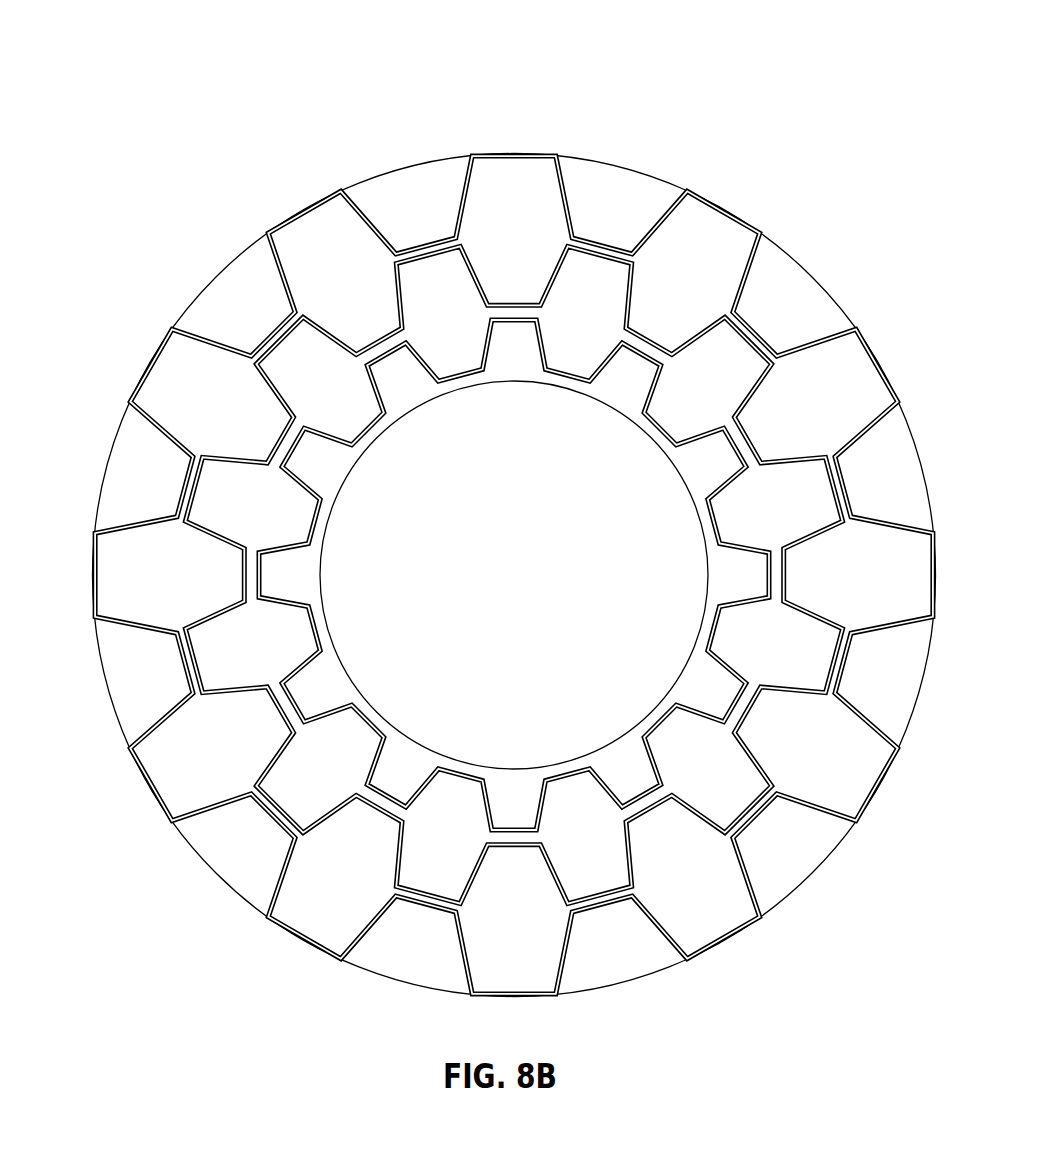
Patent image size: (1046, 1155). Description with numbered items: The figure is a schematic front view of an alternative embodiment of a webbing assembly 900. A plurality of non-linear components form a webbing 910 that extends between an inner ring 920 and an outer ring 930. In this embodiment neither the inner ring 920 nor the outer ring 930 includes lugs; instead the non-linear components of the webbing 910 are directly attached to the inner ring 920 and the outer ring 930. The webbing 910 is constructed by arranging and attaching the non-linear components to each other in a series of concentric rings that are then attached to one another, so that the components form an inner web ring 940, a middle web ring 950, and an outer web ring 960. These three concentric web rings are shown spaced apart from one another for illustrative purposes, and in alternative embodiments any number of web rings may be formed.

The webbing assembly 900 is at (499, 504).
The webbing 910 is at (514, 523).
The inner ring 920 is at (408, 733).
The outer ring 930 is at (668, 183).
The inner web ring 940 is at (660, 423).
The middle web ring 950 is at (647, 330).
The outer web ring 960 is at (603, 245).